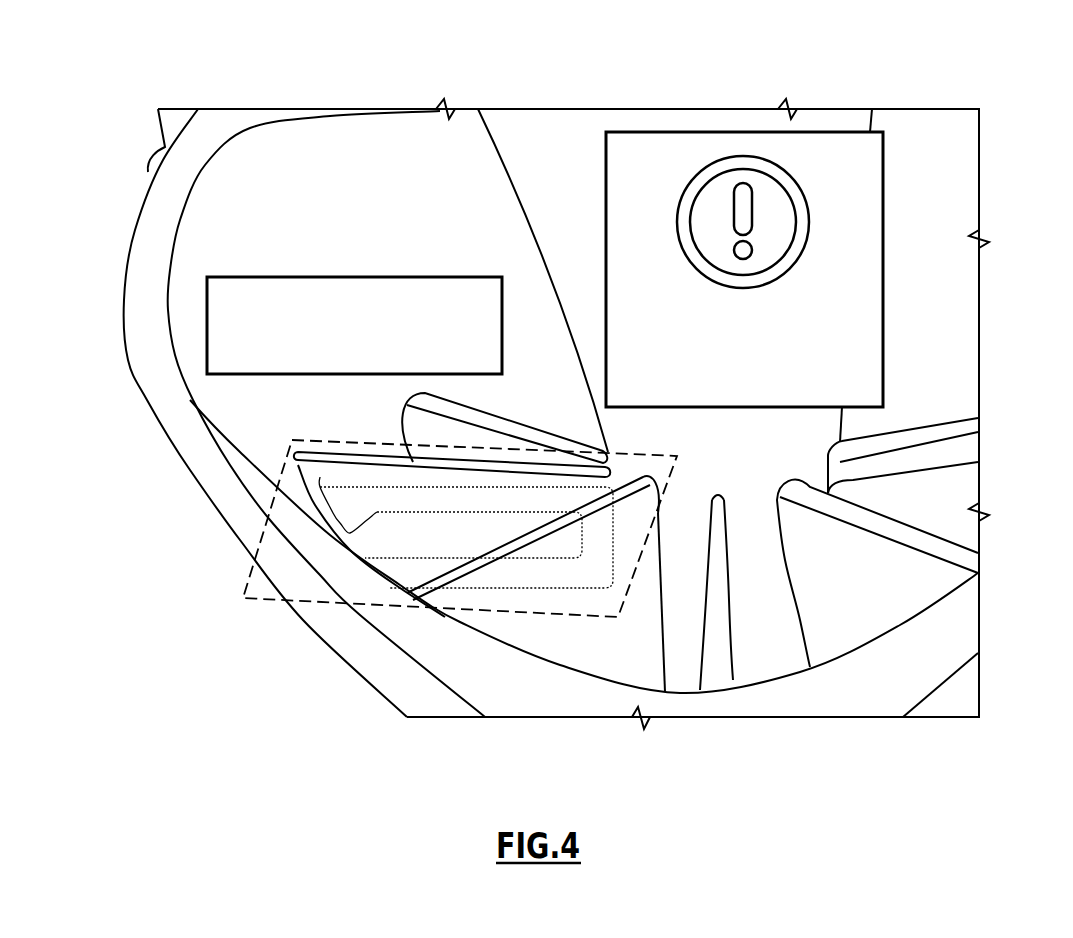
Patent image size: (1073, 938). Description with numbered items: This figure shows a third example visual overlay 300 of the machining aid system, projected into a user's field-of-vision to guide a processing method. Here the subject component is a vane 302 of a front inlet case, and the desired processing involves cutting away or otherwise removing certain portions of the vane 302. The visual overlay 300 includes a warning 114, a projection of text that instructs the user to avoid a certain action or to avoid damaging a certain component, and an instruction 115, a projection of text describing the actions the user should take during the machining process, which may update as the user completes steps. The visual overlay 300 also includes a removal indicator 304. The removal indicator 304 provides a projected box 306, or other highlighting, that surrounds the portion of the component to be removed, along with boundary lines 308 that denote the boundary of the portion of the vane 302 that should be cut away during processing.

The visual overlay 300 is at (165, 80).
The warning 114 is at (883, 273).
The instruction 115 is at (318, 277).
The vane 302 is at (292, 476).
The removal indicator 304 is at (160, 528).
The projected box 306 is at (332, 603).
The boundary lines 308 is at (466, 580).